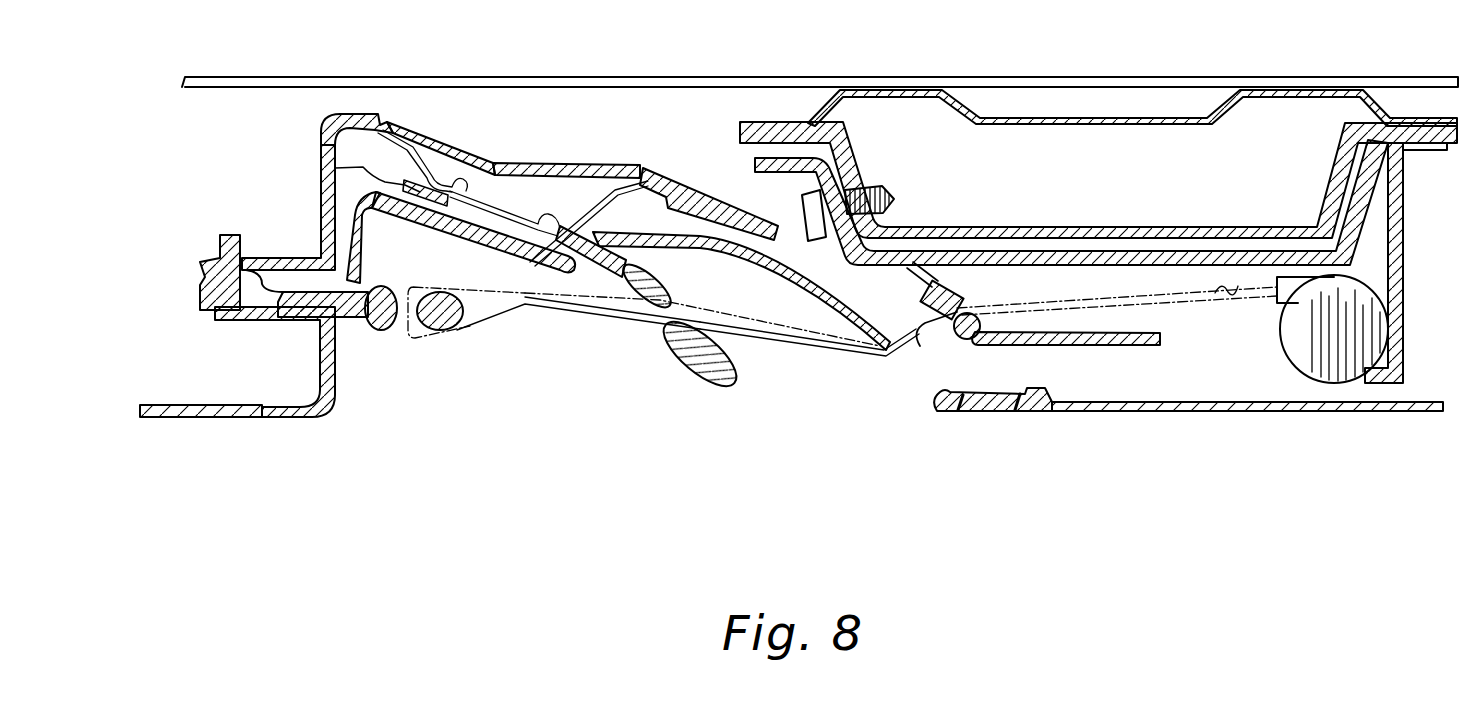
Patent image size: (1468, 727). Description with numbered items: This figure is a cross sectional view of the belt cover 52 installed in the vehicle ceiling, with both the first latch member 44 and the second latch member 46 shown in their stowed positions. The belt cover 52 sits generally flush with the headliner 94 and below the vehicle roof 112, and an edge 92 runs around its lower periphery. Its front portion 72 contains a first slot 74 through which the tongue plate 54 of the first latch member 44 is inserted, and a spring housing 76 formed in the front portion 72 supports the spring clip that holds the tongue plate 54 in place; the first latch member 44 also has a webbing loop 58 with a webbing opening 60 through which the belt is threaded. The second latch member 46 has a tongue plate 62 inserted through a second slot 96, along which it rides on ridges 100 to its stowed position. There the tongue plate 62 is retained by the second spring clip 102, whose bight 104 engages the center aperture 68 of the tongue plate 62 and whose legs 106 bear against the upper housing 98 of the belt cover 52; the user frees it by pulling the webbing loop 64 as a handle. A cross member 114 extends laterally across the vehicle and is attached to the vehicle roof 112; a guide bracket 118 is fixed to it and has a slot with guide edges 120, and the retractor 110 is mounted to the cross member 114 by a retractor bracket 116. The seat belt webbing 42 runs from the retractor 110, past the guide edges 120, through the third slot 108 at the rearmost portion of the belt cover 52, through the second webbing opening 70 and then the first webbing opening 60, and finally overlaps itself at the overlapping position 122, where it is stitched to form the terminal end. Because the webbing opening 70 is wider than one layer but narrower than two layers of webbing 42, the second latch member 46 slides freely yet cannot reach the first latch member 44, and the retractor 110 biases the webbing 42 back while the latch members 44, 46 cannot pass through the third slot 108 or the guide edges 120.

The seat belt webbing 42 is at (828, 347).
The first latch member 44 is at (384, 348).
The second latch member 46 is at (655, 366).
The belt cover 52 is at (262, 148).
The tongue plate 54 is at (347, 320).
The webbing loop 58 is at (420, 336).
The webbing opening 60 is at (397, 288).
The tongue plate 62 is at (597, 278).
The webbing loop 64 is at (737, 387).
The center aperture 68 is at (493, 162).
The webbing opening 70 is at (683, 312).
The front portion 72 is at (321, 228).
The first slot 74 is at (362, 280).
The spring housing 76 is at (218, 312).
The edge 92 is at (305, 417).
The headliner 94 is at (208, 418).
The second slot 96 is at (573, 265).
The upper housing 98 is at (520, 162).
The ridges 100 is at (358, 167).
The second spring clip 102 is at (604, 178).
The bight 104 is at (503, 227).
The legs 106 is at (427, 175).
The third slot 108 is at (937, 393).
The retractor 110 is at (1293, 350).
The vehicle roof 112 is at (1151, 80).
The cross member 114 is at (1067, 262).
The retractor bracket 116 is at (1402, 257).
The guide bracket 118 is at (930, 268).
The guide edges 120 is at (927, 328).
The overlapping position 122 is at (545, 313).